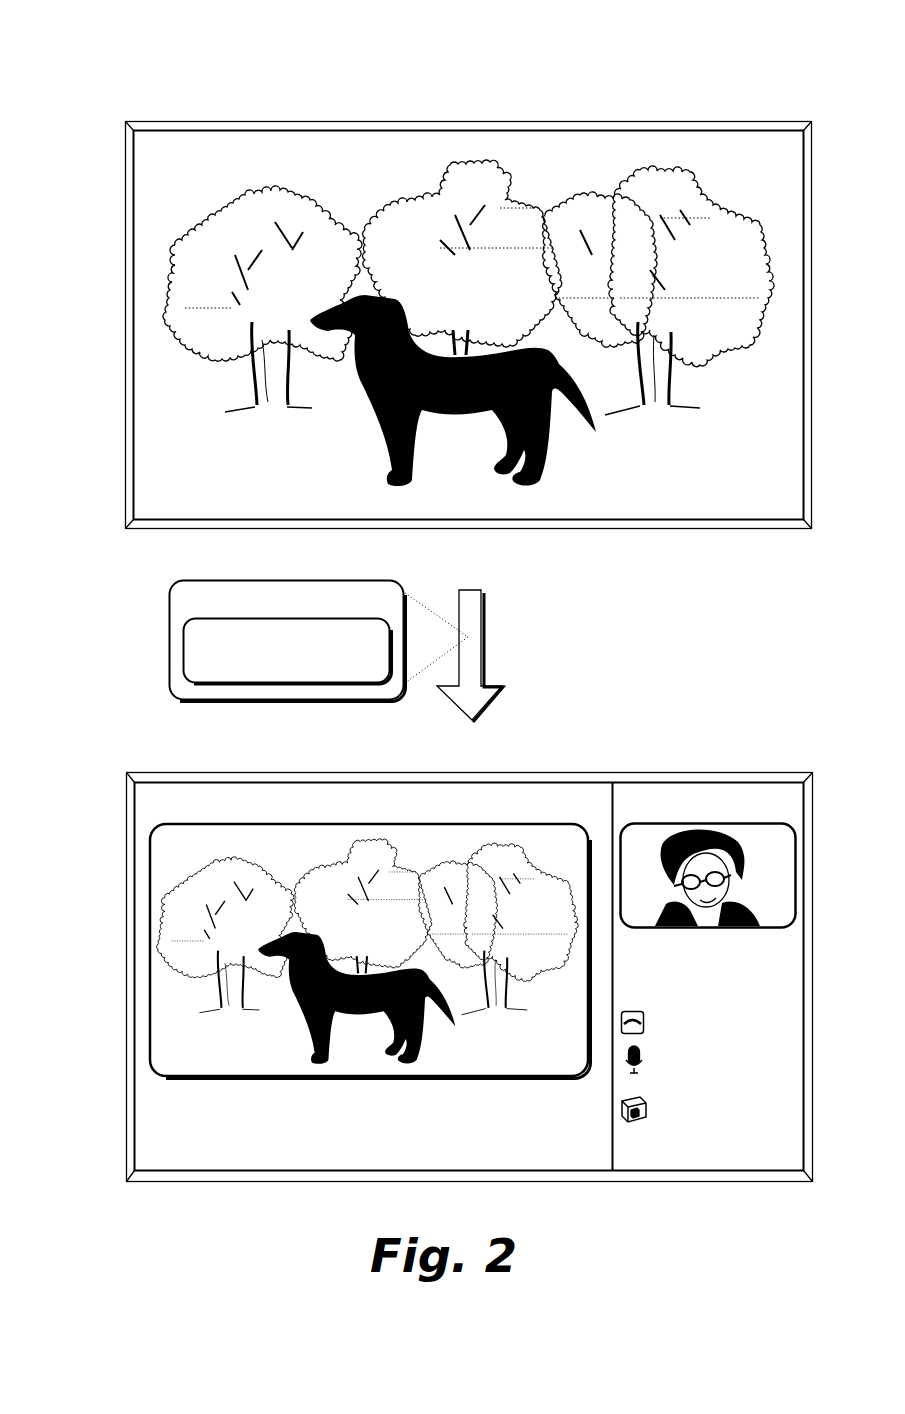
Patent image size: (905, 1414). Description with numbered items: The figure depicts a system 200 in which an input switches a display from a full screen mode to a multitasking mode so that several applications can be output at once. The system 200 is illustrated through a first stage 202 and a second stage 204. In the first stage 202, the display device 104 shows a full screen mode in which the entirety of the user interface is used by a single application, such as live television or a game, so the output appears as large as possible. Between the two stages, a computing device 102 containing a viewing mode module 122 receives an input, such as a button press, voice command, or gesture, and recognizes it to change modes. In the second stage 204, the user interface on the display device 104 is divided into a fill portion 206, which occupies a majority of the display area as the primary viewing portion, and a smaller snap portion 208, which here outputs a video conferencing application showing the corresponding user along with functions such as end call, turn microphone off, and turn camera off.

The system 200 is at (147, 62).
The first stage 202 is at (125, 112).
The second stage 204 is at (118, 731).
The display device 104 is at (131, 283).
The fill portion 206 is at (370, 759).
The snap portion 208 is at (706, 759).
The computing device 102 is at (288, 641).
The viewing mode module 122 is at (288, 652).